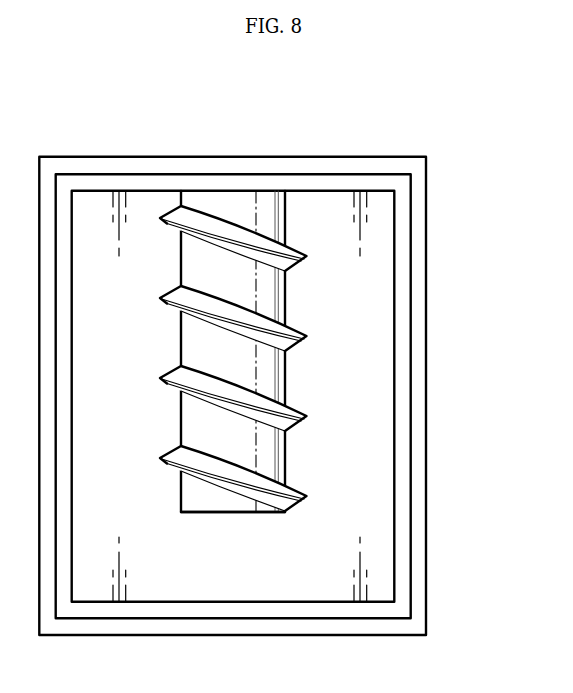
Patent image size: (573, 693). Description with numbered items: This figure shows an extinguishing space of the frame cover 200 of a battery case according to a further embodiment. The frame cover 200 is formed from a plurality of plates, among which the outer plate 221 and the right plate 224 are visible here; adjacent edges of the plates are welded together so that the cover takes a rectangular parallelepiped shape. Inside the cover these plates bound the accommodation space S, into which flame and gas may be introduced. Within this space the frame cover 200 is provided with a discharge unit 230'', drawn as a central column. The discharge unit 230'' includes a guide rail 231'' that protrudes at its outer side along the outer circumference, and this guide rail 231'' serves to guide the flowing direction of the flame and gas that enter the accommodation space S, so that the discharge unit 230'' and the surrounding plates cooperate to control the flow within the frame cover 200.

The frame cover 200 is at (128, 121).
The outer plate 221 is at (422, 171).
The right plate 224 is at (402, 224).
The discharge unit 230'' is at (335, 351).
The guide rail 231'' is at (335, 359).
The accommodation space S is at (343, 414).